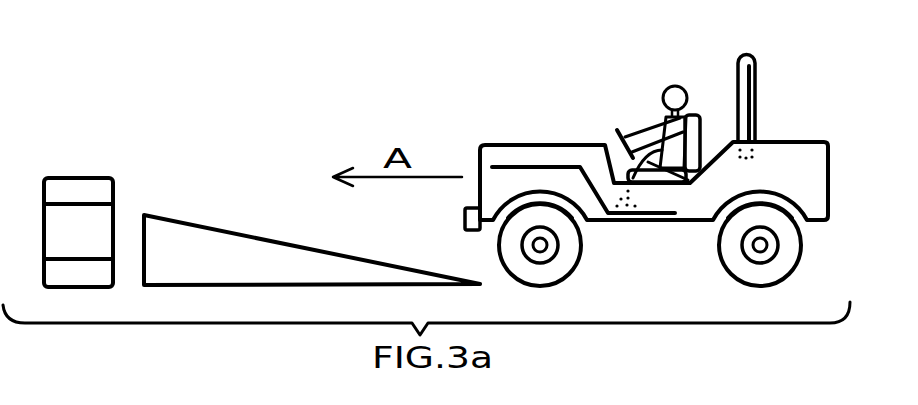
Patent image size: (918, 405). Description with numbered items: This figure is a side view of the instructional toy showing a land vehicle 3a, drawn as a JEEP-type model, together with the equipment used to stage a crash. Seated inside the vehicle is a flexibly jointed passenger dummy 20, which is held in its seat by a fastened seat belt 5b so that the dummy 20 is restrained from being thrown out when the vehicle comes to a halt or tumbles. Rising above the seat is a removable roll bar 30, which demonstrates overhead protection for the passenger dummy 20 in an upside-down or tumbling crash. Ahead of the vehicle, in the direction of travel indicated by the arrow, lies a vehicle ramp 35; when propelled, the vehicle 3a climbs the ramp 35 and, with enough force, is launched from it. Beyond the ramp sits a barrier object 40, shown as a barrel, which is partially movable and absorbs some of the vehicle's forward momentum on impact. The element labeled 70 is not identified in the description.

The land vehicle 3a is at (540, 145).
The fastened seat belt 5b is at (672, 172).
The passenger figure 20 is at (665, 92).
The roll bar 30 is at (750, 55).
The vehicle ramp 35 is at (210, 230).
The barrier object 40 is at (87, 178).
The seat back 70 is at (697, 137).